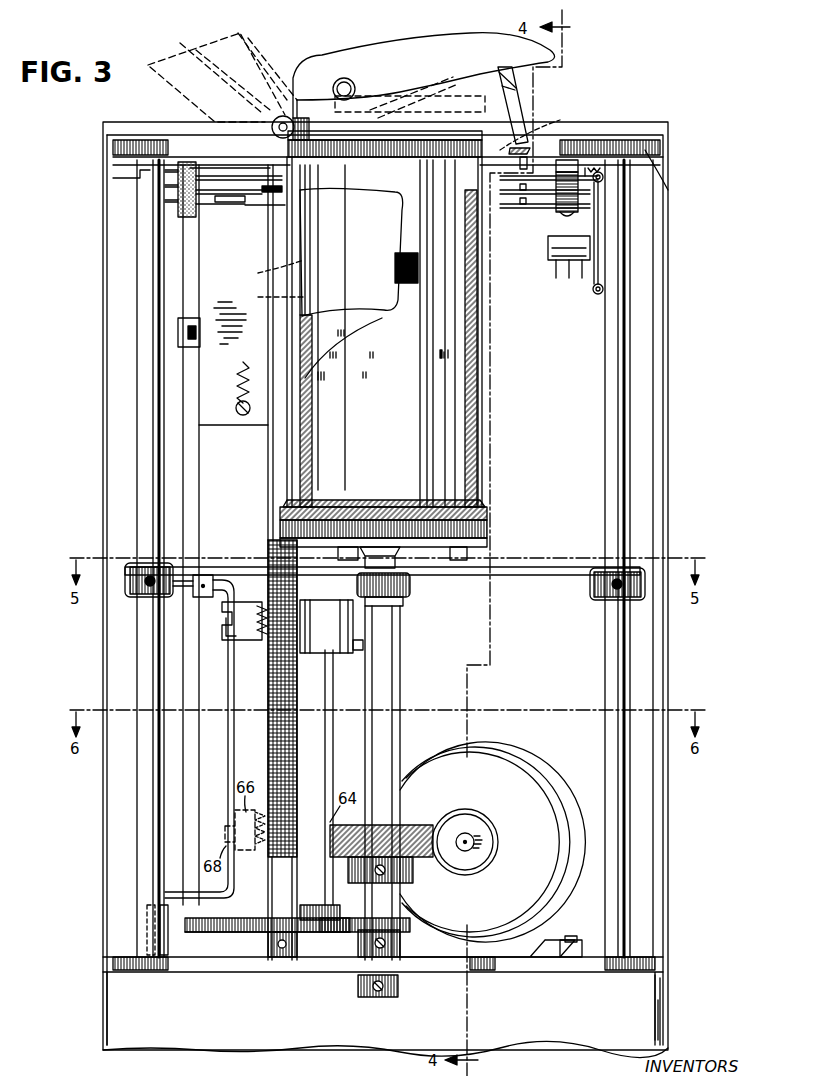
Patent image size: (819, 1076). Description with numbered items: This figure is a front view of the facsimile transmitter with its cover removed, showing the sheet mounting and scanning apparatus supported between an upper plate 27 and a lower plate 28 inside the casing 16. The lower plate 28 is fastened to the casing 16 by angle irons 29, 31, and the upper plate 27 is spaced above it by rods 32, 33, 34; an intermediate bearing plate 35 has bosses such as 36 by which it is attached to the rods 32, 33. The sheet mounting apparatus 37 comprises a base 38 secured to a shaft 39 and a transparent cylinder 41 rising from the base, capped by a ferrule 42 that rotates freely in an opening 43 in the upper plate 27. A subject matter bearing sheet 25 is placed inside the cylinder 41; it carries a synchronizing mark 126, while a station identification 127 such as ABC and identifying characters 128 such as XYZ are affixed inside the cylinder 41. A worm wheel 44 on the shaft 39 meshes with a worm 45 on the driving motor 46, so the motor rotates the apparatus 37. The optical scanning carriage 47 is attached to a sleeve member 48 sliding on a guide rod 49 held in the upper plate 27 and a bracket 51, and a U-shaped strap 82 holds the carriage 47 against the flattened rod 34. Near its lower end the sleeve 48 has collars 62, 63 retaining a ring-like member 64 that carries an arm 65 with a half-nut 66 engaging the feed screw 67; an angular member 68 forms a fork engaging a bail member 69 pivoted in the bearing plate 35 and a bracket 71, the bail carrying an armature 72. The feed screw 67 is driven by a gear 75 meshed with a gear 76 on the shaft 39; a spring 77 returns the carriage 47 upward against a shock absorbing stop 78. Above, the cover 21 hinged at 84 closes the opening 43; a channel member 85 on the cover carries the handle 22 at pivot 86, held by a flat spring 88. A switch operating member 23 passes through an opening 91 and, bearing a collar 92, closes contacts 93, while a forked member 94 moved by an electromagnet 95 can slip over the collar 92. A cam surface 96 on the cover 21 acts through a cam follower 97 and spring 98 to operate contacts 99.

The casing 16 is at (104, 828).
The cover 21 is at (250, 50).
The handle 22 is at (430, 44).
The switch operating member 23 is at (520, 110).
The subject matter bearing sheet 25 is at (462, 296).
The upper plate 27 is at (668, 182).
The lower plate 28 is at (650, 957).
The angle iron 29 is at (108, 1012).
The angle iron 31 is at (655, 1013).
The rod 32 is at (148, 480).
The rod 33 is at (632, 262).
The rod 34 is at (201, 482).
The intermediate bearing plate 35 is at (518, 568).
The boss 36 is at (590, 588).
The sheet mounting apparatus 37 is at (480, 373).
The base 38 is at (488, 512).
The shaft 39 is at (400, 687).
The transparent cylinder 41 is at (364, 312).
The ferrule 42 is at (346, 157).
The opening 43 is at (528, 130).
The worm wheel 44 is at (408, 824).
The worm 45 is at (498, 836).
The driving motor 46 is at (524, 766).
The carriage 47 is at (216, 260).
The sleeve member 48 is at (410, 587).
The guide rod 49 is at (334, 687).
The bracket 51 is at (336, 916).
The collar 62 is at (403, 602).
The collar 63 is at (363, 650).
The ring-like member 64 is at (353, 624).
The arm 65 is at (228, 612).
The half-nut 66 is at (252, 630).
The feed screw 67 is at (268, 552).
The angular member 68 is at (228, 638).
The bail member 69 is at (230, 676).
The bracket 71 is at (168, 945).
The armature 72 is at (206, 574).
The gear 75 is at (236, 934).
The gear 76 is at (398, 924).
The spring 77 is at (244, 379).
The shock absorbing stop 78 is at (178, 202).
The U-shaped strap 82 is at (178, 328).
The hinge 84 is at (312, 129).
The channel member 85 is at (206, 46).
The pivot 86 is at (344, 78).
The flat spring 88 is at (428, 102).
The opening 91 is at (600, 124).
The collar 92 is at (566, 118).
The contacts 93 is at (520, 192).
The forked member 94 is at (545, 182).
The electromagnet 95 is at (569, 269).
The cam surface 96 is at (272, 124).
The cam follower 97 is at (290, 186).
The spring 98 is at (240, 168).
The contacts 99 is at (248, 198).
The synchronizing mark 126 is at (412, 252).
The station identification 127 is at (266, 298).
The identifying characters 128 is at (266, 272).